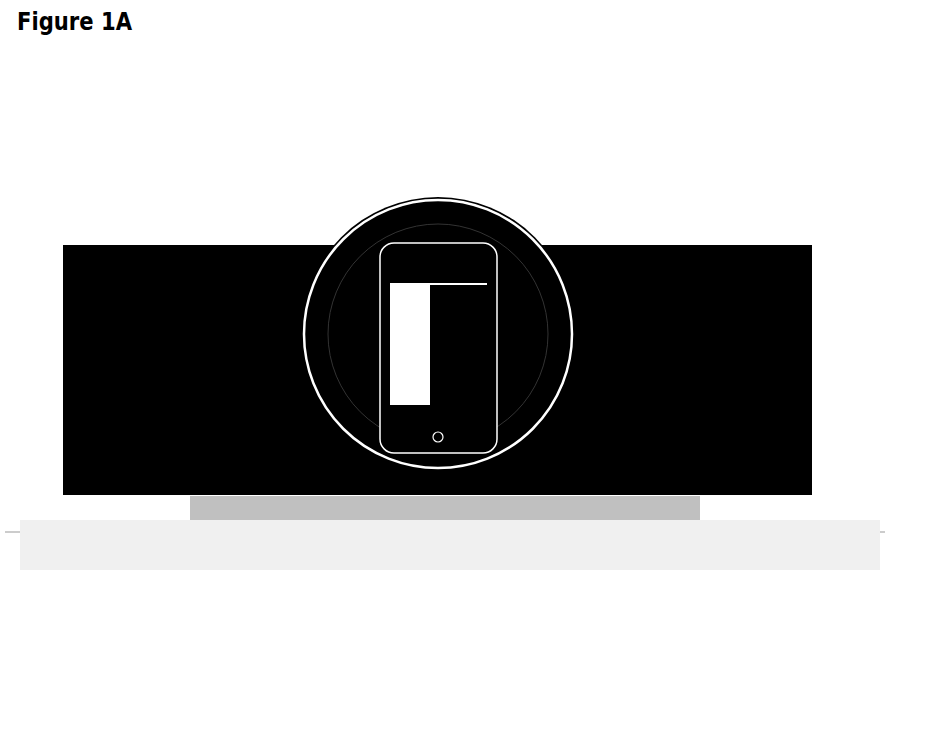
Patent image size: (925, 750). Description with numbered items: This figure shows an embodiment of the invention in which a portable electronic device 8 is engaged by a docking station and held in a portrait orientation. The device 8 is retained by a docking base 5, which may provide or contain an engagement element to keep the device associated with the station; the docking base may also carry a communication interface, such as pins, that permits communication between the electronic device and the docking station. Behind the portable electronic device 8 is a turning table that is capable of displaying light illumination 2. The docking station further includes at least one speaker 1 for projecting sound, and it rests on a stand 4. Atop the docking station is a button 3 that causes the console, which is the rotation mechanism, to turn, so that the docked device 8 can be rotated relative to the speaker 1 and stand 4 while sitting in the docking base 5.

The speaker 1 is at (145, 290).
The light illumination 2 is at (572, 307).
The button to cause the console to turn 3 is at (440, 194).
The stand 4 is at (380, 532).
The docking base 5 is at (463, 467).
The portable electronic device 8 is at (378, 357).